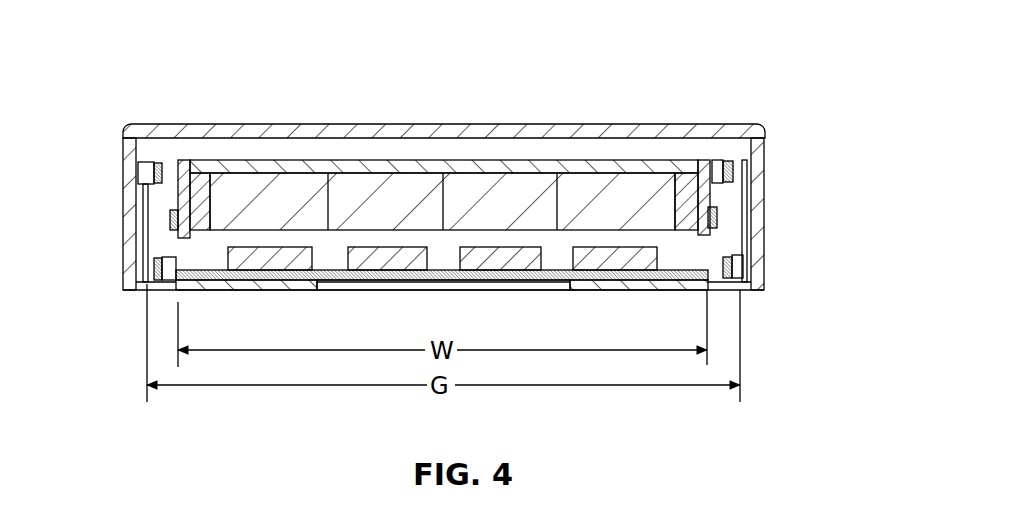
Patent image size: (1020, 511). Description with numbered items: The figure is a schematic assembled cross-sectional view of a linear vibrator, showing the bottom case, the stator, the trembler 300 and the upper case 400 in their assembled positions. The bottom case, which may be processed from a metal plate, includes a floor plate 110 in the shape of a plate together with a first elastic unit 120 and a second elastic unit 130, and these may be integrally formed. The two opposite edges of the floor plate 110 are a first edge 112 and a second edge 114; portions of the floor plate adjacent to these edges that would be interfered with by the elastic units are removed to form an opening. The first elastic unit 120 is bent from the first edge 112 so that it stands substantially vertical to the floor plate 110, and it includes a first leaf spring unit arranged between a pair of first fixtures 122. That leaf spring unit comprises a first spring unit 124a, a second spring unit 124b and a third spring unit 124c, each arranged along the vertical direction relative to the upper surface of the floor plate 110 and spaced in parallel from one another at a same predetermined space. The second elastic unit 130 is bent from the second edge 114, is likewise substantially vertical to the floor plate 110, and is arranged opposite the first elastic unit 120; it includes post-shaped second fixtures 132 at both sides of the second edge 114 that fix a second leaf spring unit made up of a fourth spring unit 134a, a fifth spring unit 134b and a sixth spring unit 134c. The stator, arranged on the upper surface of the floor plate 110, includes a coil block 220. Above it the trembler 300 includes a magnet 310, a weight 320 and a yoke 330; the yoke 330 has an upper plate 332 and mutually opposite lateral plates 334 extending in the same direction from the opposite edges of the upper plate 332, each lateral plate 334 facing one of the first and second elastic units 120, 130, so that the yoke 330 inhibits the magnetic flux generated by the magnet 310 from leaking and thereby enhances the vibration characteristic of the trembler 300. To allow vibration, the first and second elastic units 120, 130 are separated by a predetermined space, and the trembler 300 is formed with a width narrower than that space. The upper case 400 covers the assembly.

The floor plate 110 is at (263, 290).
The first edge 112 is at (144, 284).
The second edge 114 is at (757, 290).
The first elastic unit 120 is at (110, 190).
The first fixtures 122 is at (143, 246).
The first spring unit 124a is at (138, 171).
The second spring unit 124b is at (170, 220).
The third spring unit 124c is at (153, 273).
The second elastic unit 130 is at (795, 177).
The second fixtures 132 is at (745, 172).
The fourth spring unit 134a is at (727, 160).
The fifth spring unit 134b is at (717, 208).
The sixth spring unit 134c is at (732, 264).
The coil block 220 is at (473, 262).
The trembler 300 is at (444, 125).
The magnet 310 is at (522, 195).
The weight 320 is at (683, 187).
The yoke 330 is at (437, 134).
The upper plate 332 is at (240, 160).
The lateral plates 334 is at (185, 160).
The upper case 400 is at (357, 124).